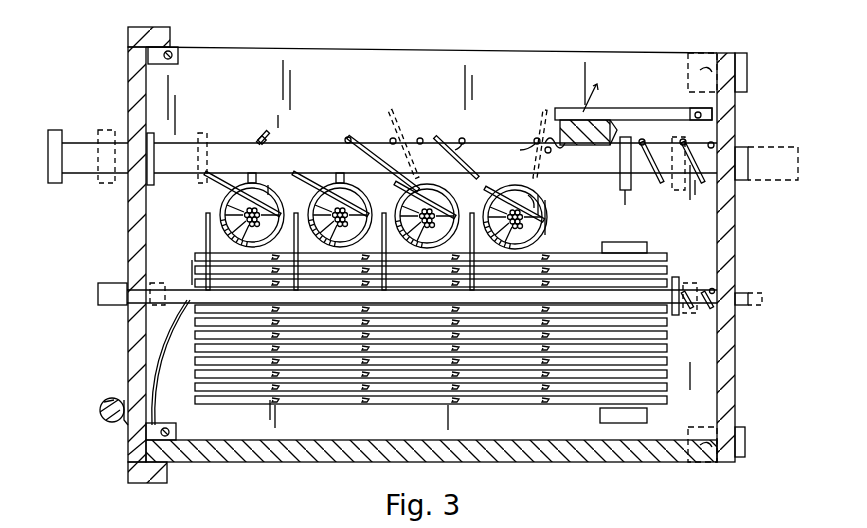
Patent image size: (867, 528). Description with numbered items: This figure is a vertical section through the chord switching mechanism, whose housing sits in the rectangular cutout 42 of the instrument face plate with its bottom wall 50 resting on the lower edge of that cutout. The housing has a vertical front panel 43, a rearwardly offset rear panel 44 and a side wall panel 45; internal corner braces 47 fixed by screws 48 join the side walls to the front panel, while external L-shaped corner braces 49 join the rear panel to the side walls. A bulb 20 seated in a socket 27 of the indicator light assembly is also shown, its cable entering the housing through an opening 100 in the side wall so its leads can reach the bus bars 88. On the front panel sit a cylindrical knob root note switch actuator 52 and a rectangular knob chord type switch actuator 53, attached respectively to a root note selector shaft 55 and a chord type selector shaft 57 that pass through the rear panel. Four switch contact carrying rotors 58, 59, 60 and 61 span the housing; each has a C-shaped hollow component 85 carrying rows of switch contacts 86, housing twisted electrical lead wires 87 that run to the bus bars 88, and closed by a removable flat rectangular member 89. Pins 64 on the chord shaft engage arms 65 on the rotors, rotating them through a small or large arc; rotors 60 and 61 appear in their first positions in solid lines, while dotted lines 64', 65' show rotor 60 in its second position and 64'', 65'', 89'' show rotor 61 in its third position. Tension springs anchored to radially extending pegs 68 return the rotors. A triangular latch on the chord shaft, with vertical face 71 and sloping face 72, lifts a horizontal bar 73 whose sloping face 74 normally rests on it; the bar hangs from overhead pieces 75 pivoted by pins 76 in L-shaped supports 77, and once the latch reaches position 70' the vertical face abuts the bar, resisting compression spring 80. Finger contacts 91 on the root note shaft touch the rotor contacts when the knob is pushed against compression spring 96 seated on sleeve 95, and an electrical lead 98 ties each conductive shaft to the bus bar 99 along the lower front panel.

The bulb 20 is at (103, 400).
The socket 27 is at (124, 400).
The rectangular cutout 42 is at (170, 40).
The front panel 43 is at (126, 430).
The rear panel 44 is at (735, 412).
The side wall panel 45 is at (401, 76).
The internal corner brace 47 is at (178, 57).
The screw 48 is at (168, 59).
The L-shaped corner brace 49 is at (748, 58).
The bottom wall 50 is at (290, 462).
The switch actuator 52 is at (105, 283).
The switch actuator 53 is at (52, 130).
The root note selector shaft 55 is at (180, 288).
The chord type selector shaft 57 is at (196, 176).
The switch contact carrying rotor 58 is at (266, 190).
The switch contact carrying rotor 59 is at (356, 195).
The switch contact carrying rotor 60 is at (447, 197).
The switch contact carrying rotor 61 is at (544, 214).
The pin 64 is at (387, 132).
The pin (second position) 64' is at (469, 152).
The pin (third position) 64'' is at (519, 156).
The arm 65 is at (368, 151).
The arm (second position) 65' is at (406, 138).
The arm (third position) 65'' is at (545, 132).
The radially extending peg 68 is at (254, 172).
The latch (latched position) 70' is at (625, 154).
The vertical face 71 is at (550, 156).
The sloping face 72 is at (585, 143).
The horizontal bar 73 is at (630, 155).
The sloping face 74 is at (610, 143).
The overhead piece 75 is at (640, 109).
The pin 76 is at (698, 112).
The L-shaped support 77 is at (712, 142).
The compression spring 80 is at (700, 182).
The hollow component 85 is at (272, 243).
The switch contact 86 is at (224, 200).
The electrical lead wire 87 is at (278, 200).
The bus bar 88 is at (194, 258).
The flat rectangular member 89 is at (366, 204).
The flat rectangular member (third position) 89'' is at (552, 194).
The finger contact 91 is at (468, 222).
The sleeve 95 is at (678, 283).
The compression spring 96 is at (694, 310).
The electrical lead 98 is at (166, 352).
The bus bar 99 is at (128, 455).
The opening 100 is at (628, 242).